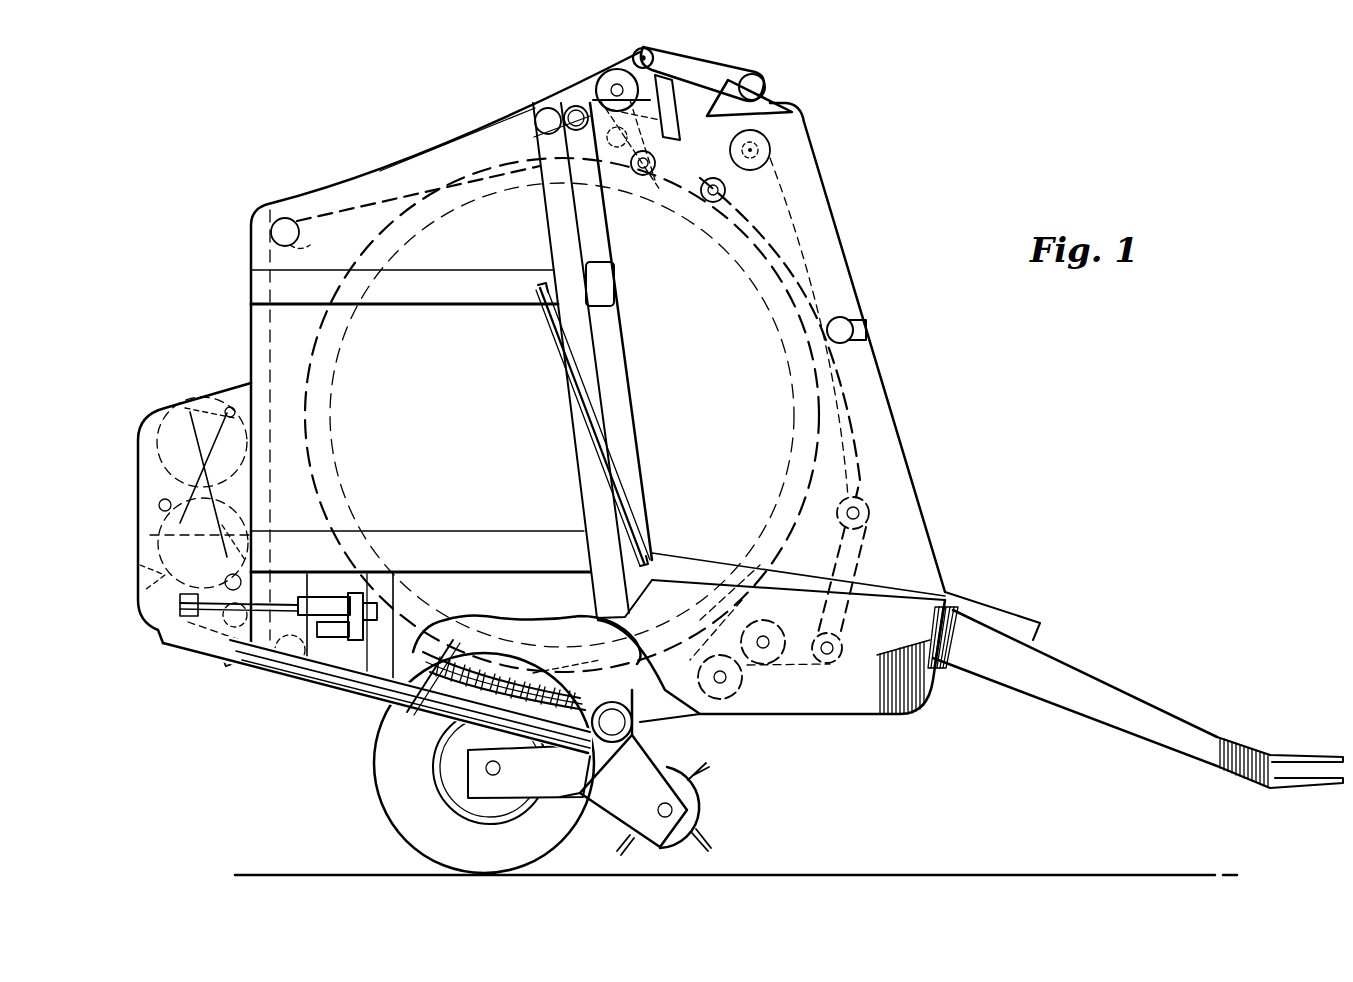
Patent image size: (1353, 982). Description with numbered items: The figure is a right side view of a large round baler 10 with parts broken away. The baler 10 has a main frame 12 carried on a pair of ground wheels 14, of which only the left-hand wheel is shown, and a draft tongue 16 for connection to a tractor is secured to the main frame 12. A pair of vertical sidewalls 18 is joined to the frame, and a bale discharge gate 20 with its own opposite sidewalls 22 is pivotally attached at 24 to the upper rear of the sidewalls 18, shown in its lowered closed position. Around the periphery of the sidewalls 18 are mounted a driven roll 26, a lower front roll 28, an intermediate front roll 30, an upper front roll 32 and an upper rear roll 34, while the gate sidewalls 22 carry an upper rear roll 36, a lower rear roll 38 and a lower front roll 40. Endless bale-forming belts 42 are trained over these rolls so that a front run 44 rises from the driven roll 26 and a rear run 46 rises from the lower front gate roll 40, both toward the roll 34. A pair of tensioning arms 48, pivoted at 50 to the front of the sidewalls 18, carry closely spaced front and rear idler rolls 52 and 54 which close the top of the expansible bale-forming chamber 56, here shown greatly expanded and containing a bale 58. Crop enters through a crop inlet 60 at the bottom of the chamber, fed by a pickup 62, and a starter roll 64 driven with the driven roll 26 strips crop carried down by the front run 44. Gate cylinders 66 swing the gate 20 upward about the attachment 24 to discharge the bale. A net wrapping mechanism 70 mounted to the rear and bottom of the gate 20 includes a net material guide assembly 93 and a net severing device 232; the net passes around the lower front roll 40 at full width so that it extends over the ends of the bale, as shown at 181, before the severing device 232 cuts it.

The baler 10 is at (908, 198).
The main frame 12 is at (933, 673).
The ground wheels 14 is at (397, 833).
The draft tongue 16 is at (1077, 660).
The sidewalls 18 is at (562, 415).
The bale discharge gate 20 is at (240, 248).
The gate sidewalls 22 is at (417, 417).
The pivotal attachment 24 is at (538, 135).
The driven roll 26 is at (767, 668).
The lower front roll 28 is at (823, 668).
The intermediate front roll 30 is at (870, 505).
The upper front roll 32 is at (772, 149).
The upper rear roll 34 is at (630, 57).
The upper rear roll 36 is at (405, 207).
The lower rear roll 38 is at (302, 696).
The lower front roll 40 is at (638, 738).
The bale-forming belts 42 is at (848, 417).
The front run 44 is at (824, 405).
The rear run 46 is at (298, 413).
The tensioning arms 48 is at (822, 256).
The pivotal mounting 50 is at (866, 330).
The front idler roll 52 is at (663, 190).
The rear idler roll 54 is at (588, 82).
The bale-forming chamber 56 is at (527, 639).
The bale 58 is at (423, 702).
The crop inlet 60 is at (668, 718).
The pickup 62 is at (703, 803).
The starter roll 64 is at (743, 703).
The gate cylinders 66 is at (588, 418).
The net wrapping mechanism 70 is at (144, 648).
The net material guide assembly 93 is at (325, 713).
The net material extending over bale ends 181 is at (482, 630).
The net severing device 232 is at (340, 588).